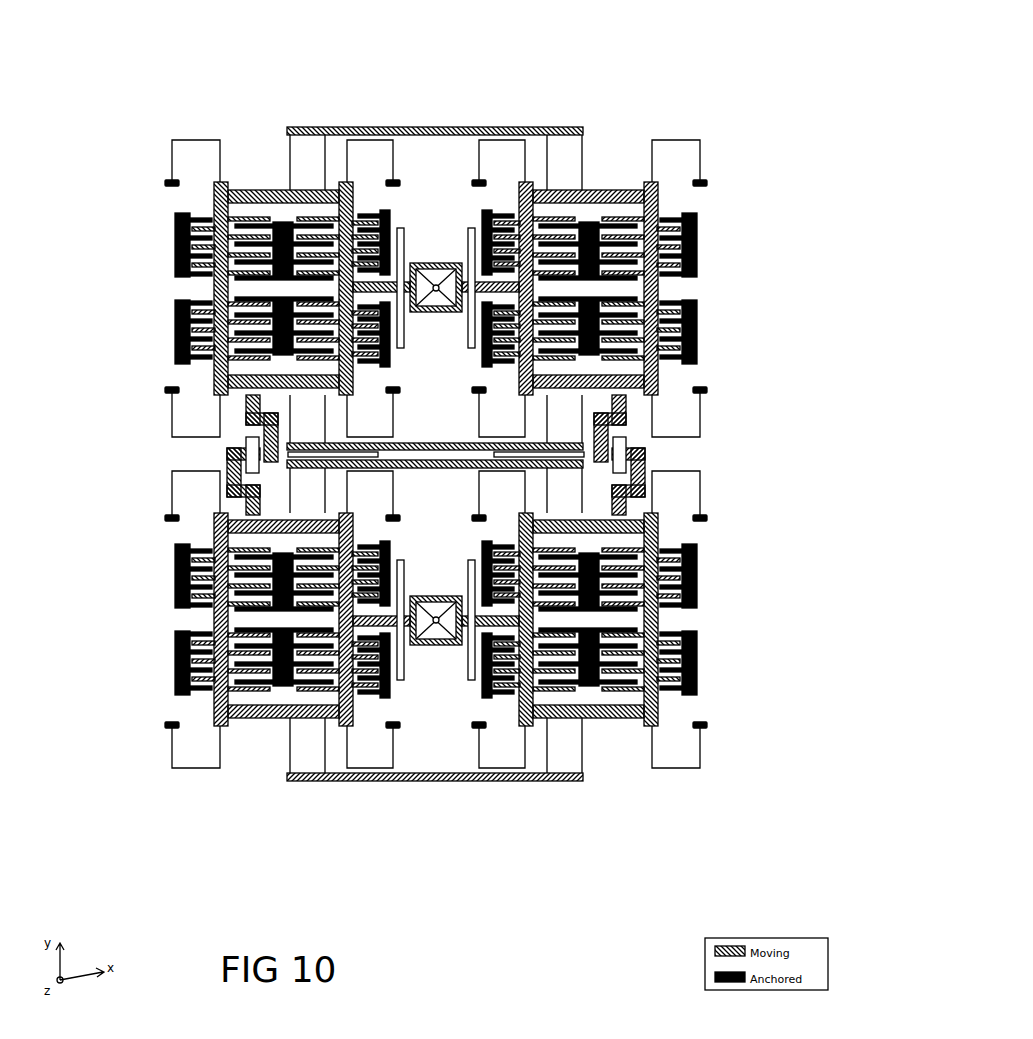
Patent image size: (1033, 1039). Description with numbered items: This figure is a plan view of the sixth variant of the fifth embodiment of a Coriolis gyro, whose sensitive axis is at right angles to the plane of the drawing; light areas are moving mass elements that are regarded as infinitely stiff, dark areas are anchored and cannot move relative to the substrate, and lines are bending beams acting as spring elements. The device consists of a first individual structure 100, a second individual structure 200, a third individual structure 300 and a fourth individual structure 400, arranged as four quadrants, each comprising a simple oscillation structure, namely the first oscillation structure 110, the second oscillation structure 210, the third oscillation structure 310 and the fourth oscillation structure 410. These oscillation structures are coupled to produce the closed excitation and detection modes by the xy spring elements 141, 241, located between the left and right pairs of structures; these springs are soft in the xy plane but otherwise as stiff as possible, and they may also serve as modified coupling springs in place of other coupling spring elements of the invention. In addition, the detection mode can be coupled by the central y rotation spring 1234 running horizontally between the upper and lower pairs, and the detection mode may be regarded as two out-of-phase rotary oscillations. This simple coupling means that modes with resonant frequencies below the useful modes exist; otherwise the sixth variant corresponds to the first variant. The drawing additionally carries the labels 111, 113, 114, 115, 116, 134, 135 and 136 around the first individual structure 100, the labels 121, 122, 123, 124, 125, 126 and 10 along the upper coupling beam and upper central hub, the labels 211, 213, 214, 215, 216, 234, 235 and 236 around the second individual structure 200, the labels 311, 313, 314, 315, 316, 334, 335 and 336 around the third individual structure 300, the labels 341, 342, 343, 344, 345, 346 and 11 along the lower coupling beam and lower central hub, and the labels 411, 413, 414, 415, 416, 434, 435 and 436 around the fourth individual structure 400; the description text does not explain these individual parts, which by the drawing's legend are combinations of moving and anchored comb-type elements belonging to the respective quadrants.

The central anchor 10 is at (440, 284).
The central anchor 11 is at (440, 624).
The first individual structure 100 is at (157, 155).
The first oscillation structure 110 is at (215, 183).
The anchor wire 111 is at (170, 417).
The anchor pad 113 is at (167, 391).
The anchored electrode 114 is at (176, 318).
The fixed comb fingers 115 is at (185, 333).
The moving comb fingers 116 is at (195, 347).
The coupling beam 121 is at (323, 170).
The anchor wire 122 is at (347, 145).
The anchored electrode 123 is at (388, 220).
The central hub frame 124 is at (428, 268).
The hub diagonal springs 125 is at (438, 285).
The hub arm and flexure 126 is at (468, 280).
The anchored electrode 134 is at (176, 232).
The fixed comb fingers 135 is at (185, 250).
The moving comb fingers 136 is at (195, 265).
The xy spring element 141 is at (223, 465).
The second individual structure 200 is at (717, 152).
The second oscillation structure 210 is at (655, 190).
The anchor wire 211 is at (702, 417).
The anchor pad 213 is at (705, 391).
The anchored electrode 214 is at (697, 318).
The fixed comb fingers 215 is at (690, 333).
The moving comb fingers 216 is at (680, 347).
The anchored electrode 234 is at (697, 230).
The fixed comb fingers 235 is at (690, 250).
The moving comb fingers 236 is at (680, 265).
The xy spring element 241 is at (649, 465).
The third individual structure 300 is at (717, 757).
The third oscillation structure 310 is at (655, 725).
The anchor wire 311 is at (700, 495).
The anchor pad 313 is at (704, 520).
The moving comb fingers 314 is at (680, 594).
The fixed comb fingers 315 is at (690, 585).
The anchored electrode 316 is at (697, 556).
The moving comb fingers 334 is at (680, 678).
The fixed comb fingers 335 is at (690, 660).
The anchored electrode 336 is at (697, 645).
The coupling beam 341 is at (323, 738).
The anchor wire 342 is at (347, 763).
The anchored electrode 343 is at (388, 688).
The central hub frame 344 is at (428, 640).
The hub diagonal springs 345 is at (438, 622).
The hub arm and flexure 346 is at (468, 628).
The fourth individual structure 400 is at (157, 757).
The fourth oscillation structure 410 is at (215, 725).
The anchor wire 411 is at (172, 495).
The anchor pad 413 is at (168, 520).
The moving comb fingers 414 is at (195, 594).
The fixed comb fingers 415 is at (185, 585).
The anchored electrode 416 is at (176, 556).
The moving comb fingers 434 is at (195, 678).
The fixed comb fingers 435 is at (185, 660).
The anchored electrode 436 is at (176, 645).
The y rotation spring 1234 is at (470, 444).